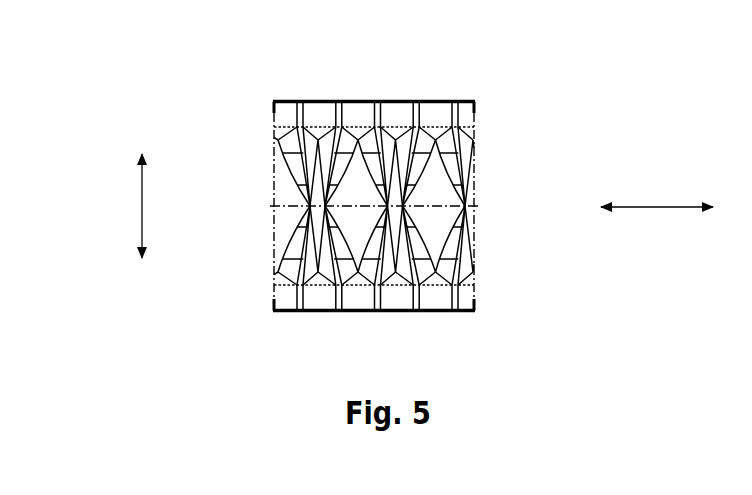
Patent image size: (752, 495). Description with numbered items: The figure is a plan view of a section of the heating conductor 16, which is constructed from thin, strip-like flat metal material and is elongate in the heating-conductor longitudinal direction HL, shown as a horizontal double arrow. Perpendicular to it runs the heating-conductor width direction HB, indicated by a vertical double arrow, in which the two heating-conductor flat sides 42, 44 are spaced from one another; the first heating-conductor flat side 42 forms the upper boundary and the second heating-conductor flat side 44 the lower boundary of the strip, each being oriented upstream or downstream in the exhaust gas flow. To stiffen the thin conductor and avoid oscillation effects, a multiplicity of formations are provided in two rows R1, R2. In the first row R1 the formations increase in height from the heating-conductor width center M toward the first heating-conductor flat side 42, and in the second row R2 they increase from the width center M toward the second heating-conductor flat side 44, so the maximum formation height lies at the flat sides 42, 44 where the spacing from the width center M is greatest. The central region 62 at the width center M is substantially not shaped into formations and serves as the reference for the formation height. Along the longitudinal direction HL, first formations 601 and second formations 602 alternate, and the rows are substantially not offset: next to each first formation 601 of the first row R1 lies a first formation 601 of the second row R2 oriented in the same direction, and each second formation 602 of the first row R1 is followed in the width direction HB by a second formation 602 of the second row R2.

The heating conductor 16 is at (402, 211).
The first heating-conductor flat side 42 is at (282, 100).
The second heating-conductor flat side 44 is at (458, 312).
The first formation 601 is at (315, 112).
The second formation 602 is at (350, 115).
The central region 62 is at (486, 188).
The heating-conductor width center M is at (432, 208).
The first row R1 is at (243, 106).
The second row R2 is at (224, 303).
The heating-conductor width direction HB is at (142, 207).
The heating-conductor longitudinal direction HL is at (657, 207).